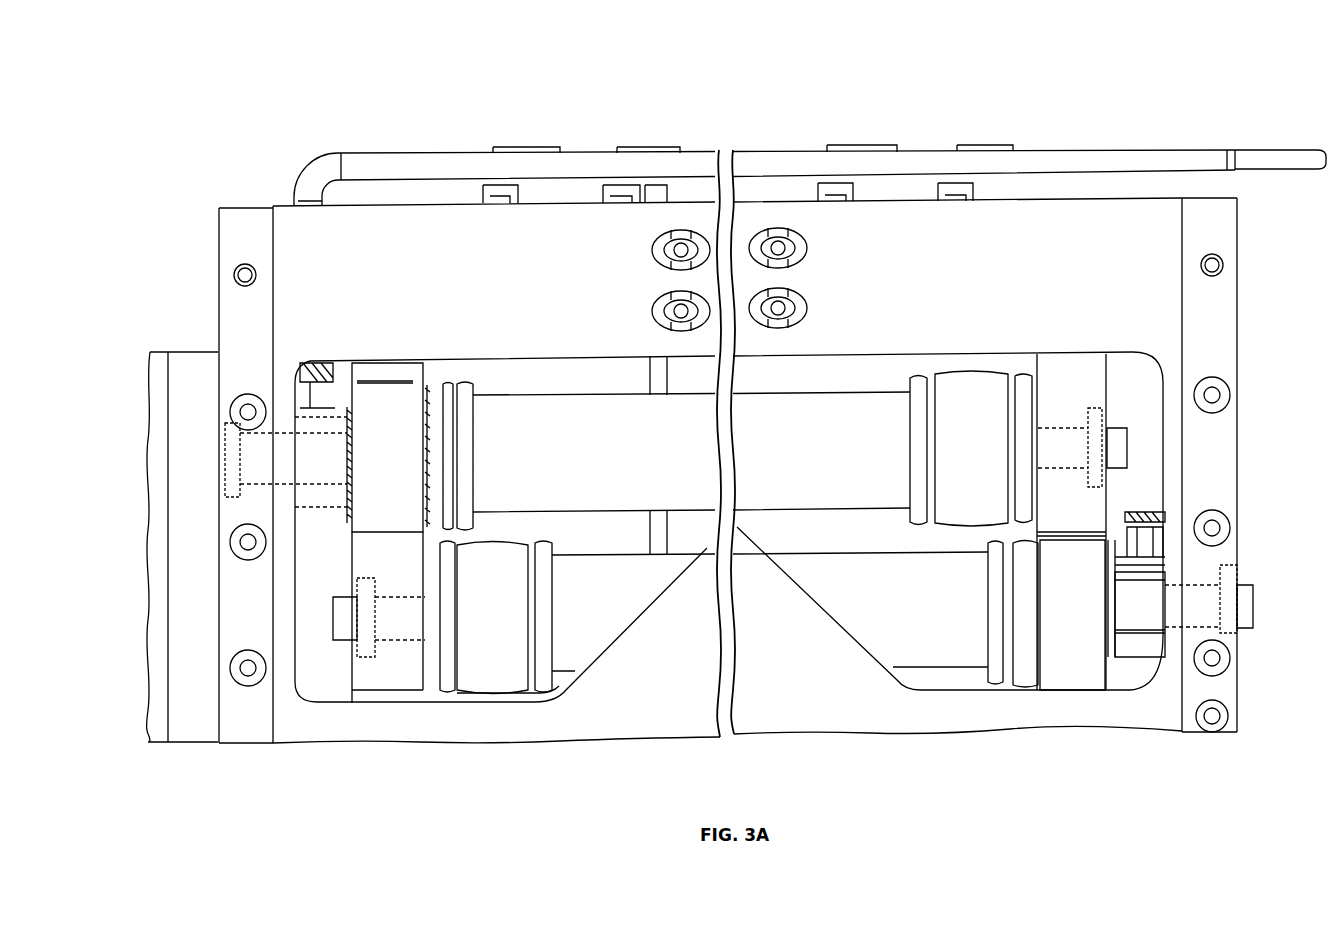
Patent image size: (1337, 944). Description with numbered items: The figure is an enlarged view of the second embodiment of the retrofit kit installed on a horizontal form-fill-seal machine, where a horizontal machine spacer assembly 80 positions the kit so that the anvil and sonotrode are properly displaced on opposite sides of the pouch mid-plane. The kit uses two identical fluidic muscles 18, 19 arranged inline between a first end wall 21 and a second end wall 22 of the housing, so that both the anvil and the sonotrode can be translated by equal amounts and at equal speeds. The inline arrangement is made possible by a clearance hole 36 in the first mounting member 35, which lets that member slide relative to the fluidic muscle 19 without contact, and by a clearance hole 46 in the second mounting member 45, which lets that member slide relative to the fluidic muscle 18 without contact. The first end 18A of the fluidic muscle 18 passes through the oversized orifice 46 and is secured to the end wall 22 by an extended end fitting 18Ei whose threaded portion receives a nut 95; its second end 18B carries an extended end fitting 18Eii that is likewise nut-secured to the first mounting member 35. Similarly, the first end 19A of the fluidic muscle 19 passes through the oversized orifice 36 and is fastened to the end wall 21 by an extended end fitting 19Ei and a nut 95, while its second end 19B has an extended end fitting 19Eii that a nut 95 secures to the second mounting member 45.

The horizontal machine spacer assembly 80 is at (157, 349).
The first end wall 21 is at (243, 613).
The second end wall 22 is at (1210, 352).
The fluidic muscle 19 is at (661, 466).
The fluidic muscle 18 is at (925, 616).
The first end of fluidic muscle 19 19A is at (347, 450).
The second end of fluidic muscle 19 19B is at (1028, 450).
The first end of fluidic muscle 18 18A is at (1115, 655).
The second end of fluidic muscle 18 18B is at (440, 633).
The extended end fitting 19Ei is at (262, 455).
The extended end fitting 19Eii is at (1070, 445).
The extended end fitting 18Ei is at (1190, 608).
The lower shaft second end adjustment bolt 18Eii is at (398, 622).
The clearance hole 36 is at (378, 375).
The first mounting member 35 is at (405, 683).
The second mounting member 45 is at (1073, 372).
The clearance hole 46 is at (1062, 683).
The nut 95 is at (1097, 473).